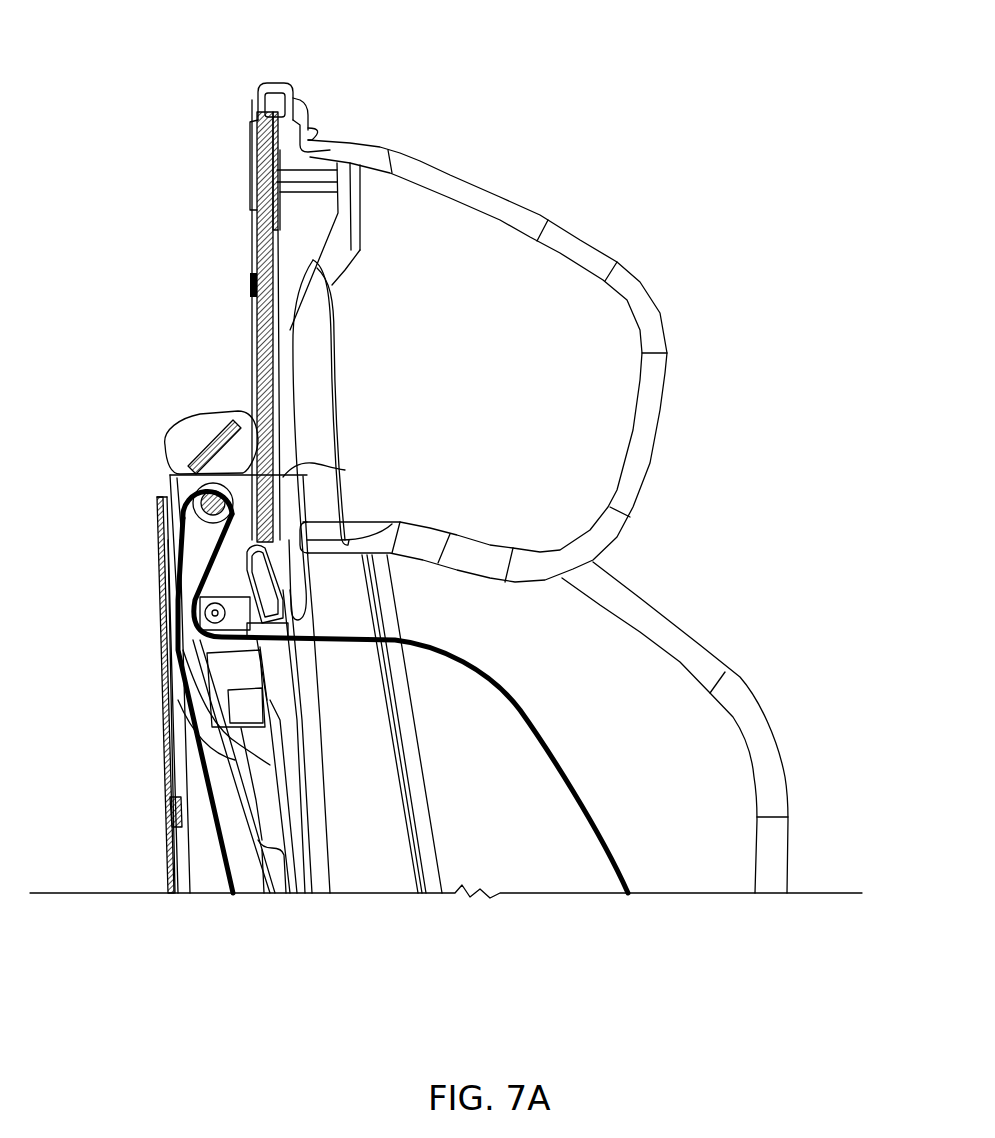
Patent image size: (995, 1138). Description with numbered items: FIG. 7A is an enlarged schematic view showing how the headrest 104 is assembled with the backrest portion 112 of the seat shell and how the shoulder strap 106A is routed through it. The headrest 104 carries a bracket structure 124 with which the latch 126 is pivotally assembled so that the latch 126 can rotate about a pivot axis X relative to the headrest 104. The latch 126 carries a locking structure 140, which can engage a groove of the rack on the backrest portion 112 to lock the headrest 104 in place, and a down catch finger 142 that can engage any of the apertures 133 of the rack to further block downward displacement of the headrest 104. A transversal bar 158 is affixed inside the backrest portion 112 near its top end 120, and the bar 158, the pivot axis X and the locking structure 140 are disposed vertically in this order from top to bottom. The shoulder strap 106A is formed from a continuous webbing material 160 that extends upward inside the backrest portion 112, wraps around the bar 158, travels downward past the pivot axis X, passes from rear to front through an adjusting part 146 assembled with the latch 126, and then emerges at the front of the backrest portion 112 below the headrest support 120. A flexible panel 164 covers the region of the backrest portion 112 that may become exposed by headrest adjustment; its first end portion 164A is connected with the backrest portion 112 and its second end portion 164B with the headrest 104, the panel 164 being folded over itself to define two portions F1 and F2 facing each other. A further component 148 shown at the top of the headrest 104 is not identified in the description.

The headrest 104 is at (530, 231).
The shoulder strap 106A is at (573, 783).
The backrest portion 112 is at (150, 672).
The top end of the backrest portion 120 is at (193, 438).
The bracket structure 124 is at (392, 525).
The latch 126 is at (153, 707).
The apertures 133 is at (280, 715).
The locking structure 140 is at (248, 762).
The down catch finger 142 is at (278, 738).
The adjusting part 146 is at (230, 683).
The head rest post cap 148 is at (273, 83).
The transversal bar 158 is at (157, 505).
The webbing material 160 is at (210, 850).
The panel 164 is at (248, 366).
The first end portion 164A is at (236, 438).
The second end portion 164B is at (252, 274).
The first portion of the panel F1 is at (280, 477).
The second portion of the panel F2 is at (275, 305).
The pivot axis X is at (178, 622).